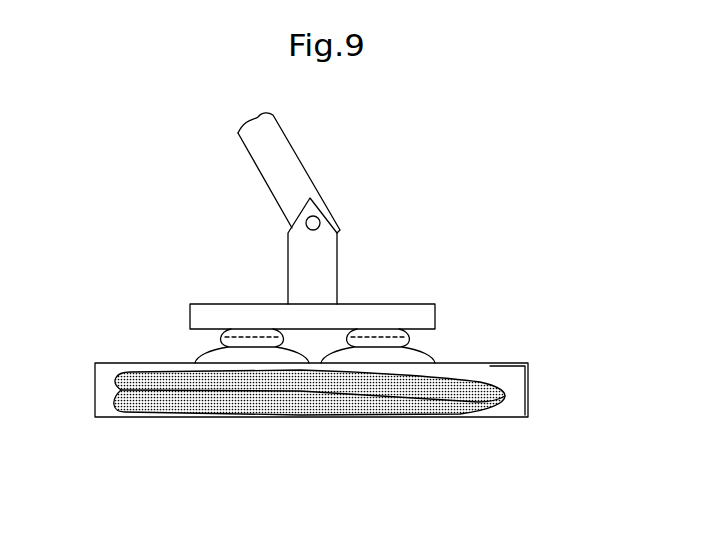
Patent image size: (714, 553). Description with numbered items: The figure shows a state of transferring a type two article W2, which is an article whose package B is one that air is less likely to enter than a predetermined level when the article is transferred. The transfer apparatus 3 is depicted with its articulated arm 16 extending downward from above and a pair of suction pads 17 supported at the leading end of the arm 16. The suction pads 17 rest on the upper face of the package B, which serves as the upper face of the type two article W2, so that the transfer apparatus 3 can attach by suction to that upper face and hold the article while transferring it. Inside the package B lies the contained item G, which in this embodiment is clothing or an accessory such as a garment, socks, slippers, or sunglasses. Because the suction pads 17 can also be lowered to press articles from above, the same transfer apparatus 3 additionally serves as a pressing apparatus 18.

The transfer apparatus 3 is at (210, 183).
The pressing apparatus 18 is at (272, 229).
The articulated arm 16 is at (288, 165).
The suction pad 17 is at (252, 355).
The type 2 article W2 is at (500, 342).
The package B is at (123, 363).
The contained item G is at (322, 410).